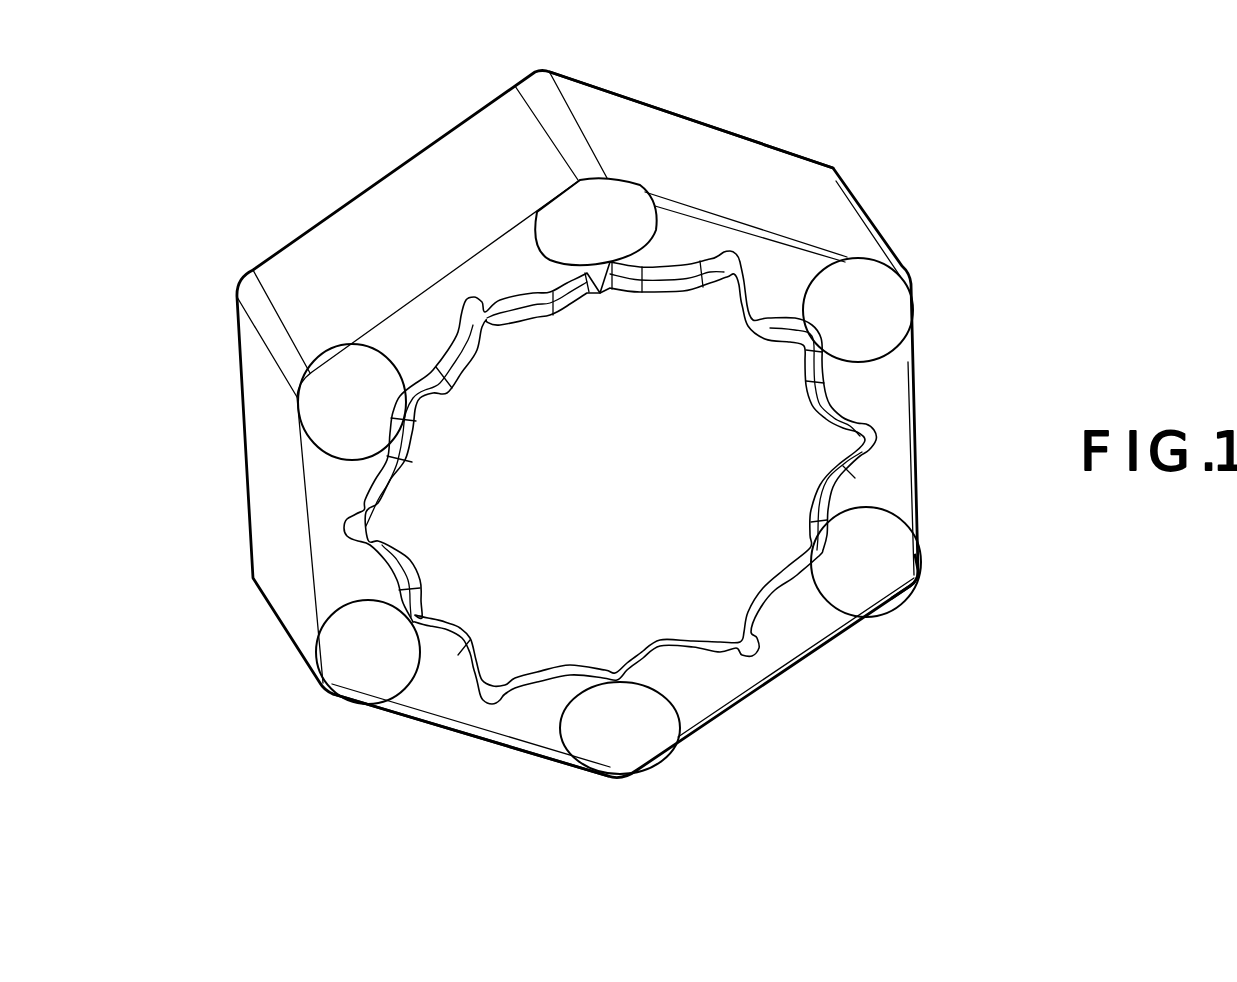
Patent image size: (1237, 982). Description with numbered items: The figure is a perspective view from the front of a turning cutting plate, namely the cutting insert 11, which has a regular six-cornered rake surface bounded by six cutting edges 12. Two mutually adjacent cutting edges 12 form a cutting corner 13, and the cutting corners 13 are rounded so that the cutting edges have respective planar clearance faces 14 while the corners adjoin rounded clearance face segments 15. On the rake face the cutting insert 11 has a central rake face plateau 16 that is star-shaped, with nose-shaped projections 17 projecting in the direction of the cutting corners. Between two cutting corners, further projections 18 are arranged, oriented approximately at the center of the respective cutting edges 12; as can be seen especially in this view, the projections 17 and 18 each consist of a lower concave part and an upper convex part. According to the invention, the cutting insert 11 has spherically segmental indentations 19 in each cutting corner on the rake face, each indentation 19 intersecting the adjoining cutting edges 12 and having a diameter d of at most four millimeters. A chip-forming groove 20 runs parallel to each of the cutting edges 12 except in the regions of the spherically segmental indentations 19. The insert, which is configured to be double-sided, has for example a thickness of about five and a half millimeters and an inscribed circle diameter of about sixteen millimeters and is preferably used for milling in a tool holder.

The lock nut body 11 is at (916, 230).
The thin wall rim 12 is at (919, 427).
The lower corner edge 13 is at (937, 588).
The top face 14 is at (742, 190).
The corner strip 15 is at (567, 137).
The central opening 16 is at (625, 480).
The lobe recess 17 is at (392, 633).
The wavy spring strip 18 is at (755, 688).
The lobe recess 19 is at (895, 577).
The bottom edge 20 is at (445, 695).
The lobe diameter d is at (680, 723).